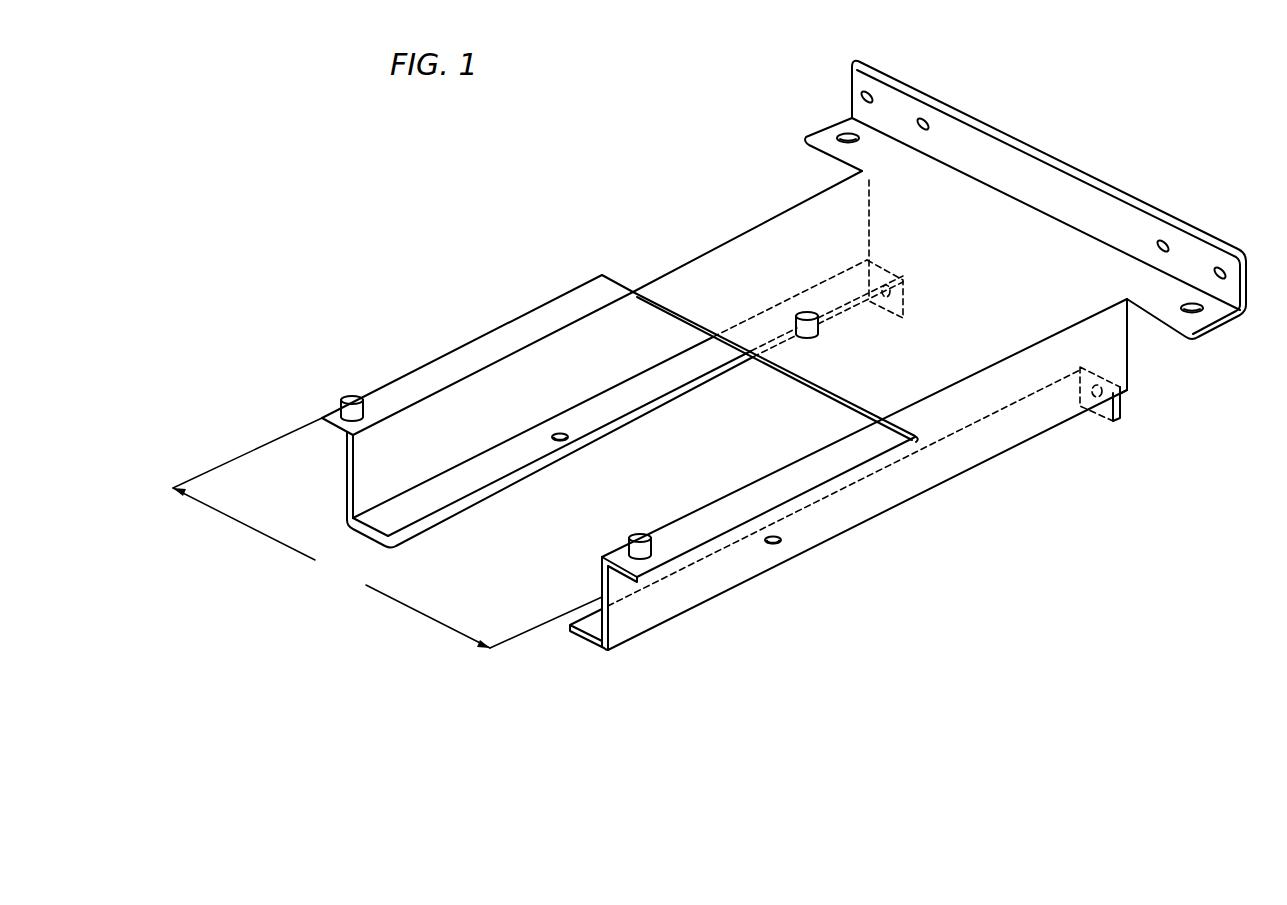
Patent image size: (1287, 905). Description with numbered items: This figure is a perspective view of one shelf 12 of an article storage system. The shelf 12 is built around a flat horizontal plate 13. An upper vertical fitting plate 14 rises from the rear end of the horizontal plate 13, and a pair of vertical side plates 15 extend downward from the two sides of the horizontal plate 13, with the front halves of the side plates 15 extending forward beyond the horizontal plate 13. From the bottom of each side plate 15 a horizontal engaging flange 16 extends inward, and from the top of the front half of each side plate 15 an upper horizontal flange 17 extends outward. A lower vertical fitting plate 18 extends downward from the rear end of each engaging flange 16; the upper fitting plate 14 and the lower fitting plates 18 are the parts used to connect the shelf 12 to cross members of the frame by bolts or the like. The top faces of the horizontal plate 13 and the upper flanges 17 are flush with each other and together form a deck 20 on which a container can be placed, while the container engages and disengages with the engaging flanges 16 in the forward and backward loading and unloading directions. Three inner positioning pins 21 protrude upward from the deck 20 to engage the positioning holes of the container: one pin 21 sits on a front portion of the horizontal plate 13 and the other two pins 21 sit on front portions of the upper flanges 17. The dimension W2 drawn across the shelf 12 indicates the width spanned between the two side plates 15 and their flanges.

The shelf 12 is at (634, 208).
The horizontal plate 13 is at (990, 333).
The upper vertical fitting plate 14 is at (1010, 163).
The vertical side plate 15 is at (340, 470).
The horizontal engaging flange 16 is at (440, 516).
The upper horizontal flange 17 is at (700, 417).
The lower vertical fitting plate 18 is at (1120, 421).
The deck 20 is at (790, 228).
The inner positioning pin 21 is at (352, 395).
The width dimension W2 is at (387, 533).